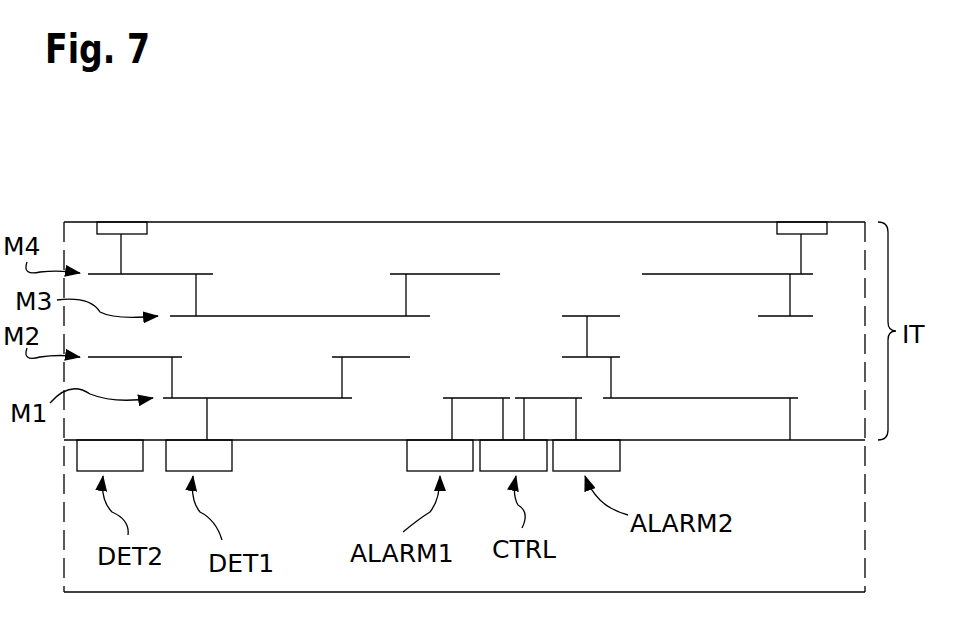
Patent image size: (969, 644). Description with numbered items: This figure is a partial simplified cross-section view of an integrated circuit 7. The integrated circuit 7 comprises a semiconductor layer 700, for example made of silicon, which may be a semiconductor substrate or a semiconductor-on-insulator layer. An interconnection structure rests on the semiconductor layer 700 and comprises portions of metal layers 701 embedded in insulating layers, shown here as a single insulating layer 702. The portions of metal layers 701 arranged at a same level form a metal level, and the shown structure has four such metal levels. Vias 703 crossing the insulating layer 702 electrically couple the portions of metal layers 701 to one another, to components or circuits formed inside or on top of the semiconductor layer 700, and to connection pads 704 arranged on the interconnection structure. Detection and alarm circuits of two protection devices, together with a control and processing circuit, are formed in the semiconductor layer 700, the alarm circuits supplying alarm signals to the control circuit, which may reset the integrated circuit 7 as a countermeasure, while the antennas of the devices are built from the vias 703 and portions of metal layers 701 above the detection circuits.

The integrated circuit 7 is at (44, 204).
The semiconductor layer 700 is at (848, 505).
The portions of metal layers 701 is at (205, 272).
The insulating layer 702 is at (528, 334).
The vias 703 is at (122, 258).
The connection pads 704 is at (130, 222).